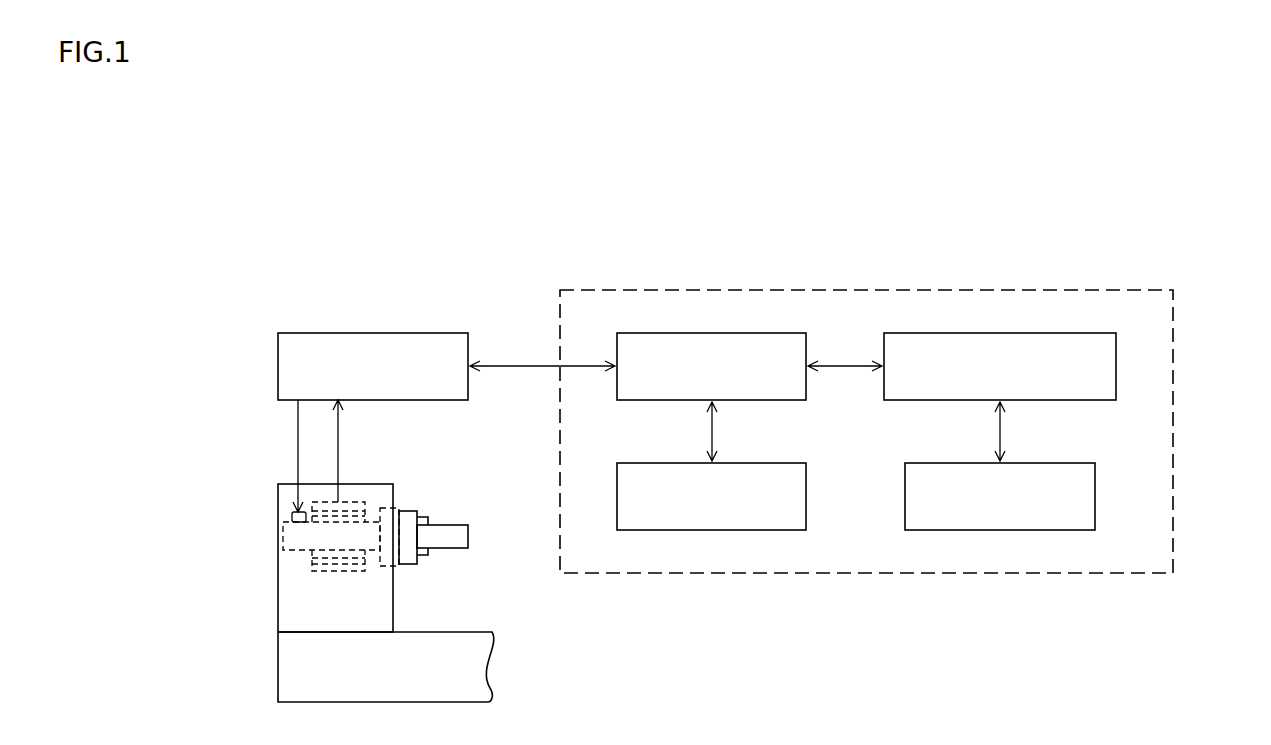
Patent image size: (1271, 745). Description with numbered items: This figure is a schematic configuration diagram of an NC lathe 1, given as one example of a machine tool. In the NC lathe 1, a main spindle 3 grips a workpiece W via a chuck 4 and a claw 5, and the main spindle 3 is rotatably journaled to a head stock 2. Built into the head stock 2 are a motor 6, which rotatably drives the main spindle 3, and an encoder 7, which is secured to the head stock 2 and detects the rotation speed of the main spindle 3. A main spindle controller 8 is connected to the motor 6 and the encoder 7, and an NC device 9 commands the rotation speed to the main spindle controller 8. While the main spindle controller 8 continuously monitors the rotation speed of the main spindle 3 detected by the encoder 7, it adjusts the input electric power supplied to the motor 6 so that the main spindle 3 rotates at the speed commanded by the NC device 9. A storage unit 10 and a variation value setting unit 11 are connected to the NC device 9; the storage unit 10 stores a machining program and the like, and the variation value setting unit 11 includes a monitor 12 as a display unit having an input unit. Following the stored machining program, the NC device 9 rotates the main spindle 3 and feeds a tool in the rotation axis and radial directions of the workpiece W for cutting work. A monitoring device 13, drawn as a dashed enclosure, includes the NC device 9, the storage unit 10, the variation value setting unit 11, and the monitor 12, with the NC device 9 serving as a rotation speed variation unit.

The NC lathe 1 is at (502, 304).
The head stock 2 is at (280, 483).
The main spindle 3 is at (297, 548).
The chuck 4 is at (408, 517).
The claw 5 is at (428, 519).
The motor 6 is at (336, 572).
The encoder 7 is at (292, 516).
The main spindle controller 8 is at (312, 333).
The NC device 9 is at (766, 333).
The storage unit 10 is at (766, 530).
The variation value setting unit 11 is at (1053, 333).
The monitor 12 is at (1052, 530).
The monitoring device 13 is at (1173, 350).
The workpiece W is at (445, 546).